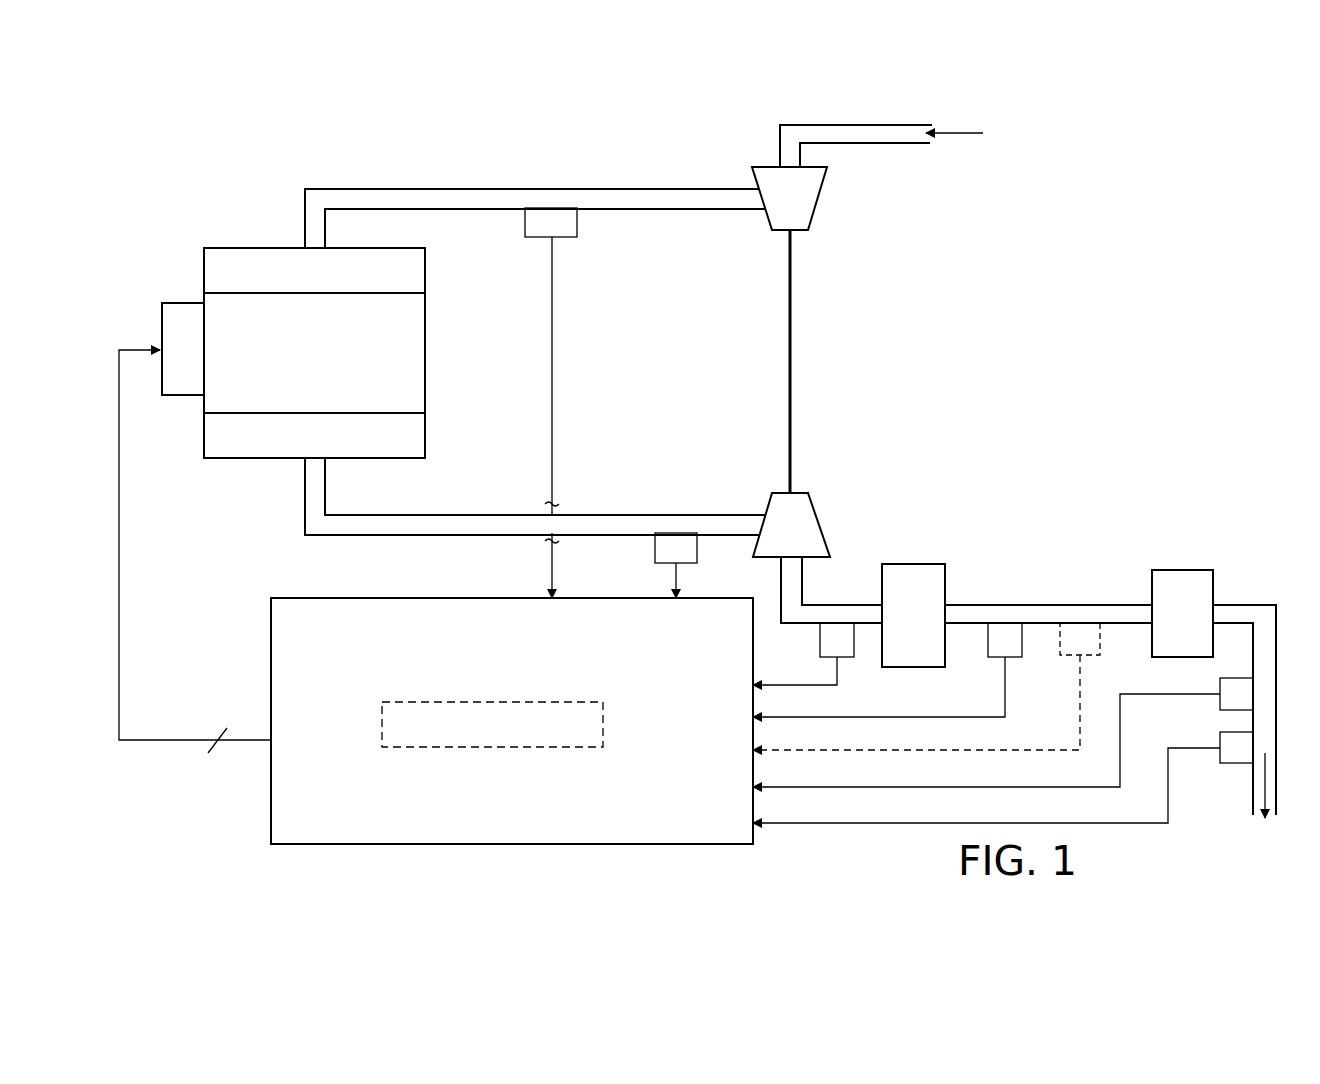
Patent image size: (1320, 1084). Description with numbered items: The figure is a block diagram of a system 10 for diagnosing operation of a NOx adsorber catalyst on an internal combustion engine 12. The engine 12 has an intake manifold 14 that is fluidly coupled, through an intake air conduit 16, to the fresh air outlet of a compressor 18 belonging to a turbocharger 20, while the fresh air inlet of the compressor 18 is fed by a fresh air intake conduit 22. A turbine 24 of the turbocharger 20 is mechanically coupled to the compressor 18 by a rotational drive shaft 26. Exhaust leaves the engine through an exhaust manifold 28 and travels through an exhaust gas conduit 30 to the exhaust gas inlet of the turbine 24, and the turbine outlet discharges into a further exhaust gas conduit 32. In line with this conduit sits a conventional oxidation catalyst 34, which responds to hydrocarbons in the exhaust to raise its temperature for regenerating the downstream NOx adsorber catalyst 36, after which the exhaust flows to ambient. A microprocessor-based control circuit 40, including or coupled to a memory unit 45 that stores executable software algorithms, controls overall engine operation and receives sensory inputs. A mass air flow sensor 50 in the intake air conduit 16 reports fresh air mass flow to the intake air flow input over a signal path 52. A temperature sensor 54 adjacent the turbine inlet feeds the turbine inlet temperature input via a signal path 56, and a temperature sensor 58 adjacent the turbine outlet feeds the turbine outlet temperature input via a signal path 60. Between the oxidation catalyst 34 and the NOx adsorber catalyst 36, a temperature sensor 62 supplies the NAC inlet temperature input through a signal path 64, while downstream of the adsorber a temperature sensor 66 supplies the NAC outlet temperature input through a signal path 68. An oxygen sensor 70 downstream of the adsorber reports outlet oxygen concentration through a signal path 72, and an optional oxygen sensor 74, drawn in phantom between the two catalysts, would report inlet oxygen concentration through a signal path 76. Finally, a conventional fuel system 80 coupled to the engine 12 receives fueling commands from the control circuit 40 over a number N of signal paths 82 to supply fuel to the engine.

The system 10 is at (1120, 392).
The internal combustion engine 12 is at (427, 350).
The intake manifold 14 is at (245, 247).
The intake air conduit 16 is at (473, 187).
The compressor 18 is at (820, 208).
The turbocharger 20 is at (855, 362).
The fresh air intake conduit 22 is at (862, 146).
The turbine 24 is at (782, 492).
The rotational drive shaft 26 is at (788, 320).
The exhaust manifold 28 is at (247, 460).
The exhaust gas conduit 30 is at (462, 513).
The exhaust gas conduit 32 is at (1048, 603).
The oxidation catalyst 34 is at (912, 564).
The NOx adsorber catalyst 36 is at (1183, 570).
The control circuit 40 is at (271, 632).
The memory unit 45 is at (606, 716).
The mass air flow sensor 50 is at (566, 240).
The signal path 52 is at (553, 352).
The temperature sensor 54 is at (655, 548).
The signal path 56 is at (680, 580).
The temperature sensor 58 is at (840, 660).
The signal path 60 is at (795, 682).
The temperature sensor 62 is at (1000, 660).
The signal path 64 is at (935, 717).
The temperature sensor 66 is at (1243, 678).
The signal path 68 is at (1150, 697).
The oxygen sensor 70 is at (1243, 765).
The signal path 72 is at (1200, 750).
The oxygen sensor 74 is at (1070, 658).
The signal path 76 is at (1078, 713).
The fuel system 80 is at (180, 303).
The signal paths 82 is at (148, 740).